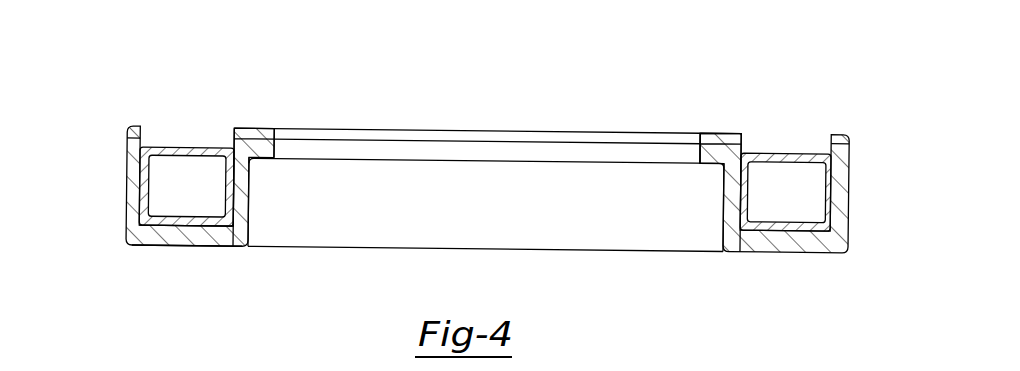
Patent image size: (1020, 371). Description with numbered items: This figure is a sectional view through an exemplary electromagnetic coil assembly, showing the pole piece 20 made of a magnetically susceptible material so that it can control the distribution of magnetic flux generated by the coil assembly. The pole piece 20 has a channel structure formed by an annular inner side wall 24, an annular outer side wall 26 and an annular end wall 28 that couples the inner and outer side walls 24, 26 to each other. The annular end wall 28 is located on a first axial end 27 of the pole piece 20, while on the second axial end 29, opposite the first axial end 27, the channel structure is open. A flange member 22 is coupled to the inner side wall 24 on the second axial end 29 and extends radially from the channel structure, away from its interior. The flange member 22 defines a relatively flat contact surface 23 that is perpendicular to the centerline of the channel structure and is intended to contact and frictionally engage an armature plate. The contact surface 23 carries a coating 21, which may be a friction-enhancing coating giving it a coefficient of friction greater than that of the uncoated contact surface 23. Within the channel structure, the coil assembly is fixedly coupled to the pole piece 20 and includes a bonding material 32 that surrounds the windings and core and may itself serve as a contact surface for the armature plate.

The pole piece 20 is at (458, 180).
The coating 21 is at (274, 135).
The flange member 22 is at (266, 162).
The contact surface 23 is at (252, 86).
The annular inner side wall 24 is at (248, 217).
The annular outer side wall 26 is at (126, 161).
The first axial end 27 is at (795, 287).
The annular end wall 28 is at (183, 246).
The second axial end 29 is at (802, 81).
The bonding material 32 is at (777, 160).